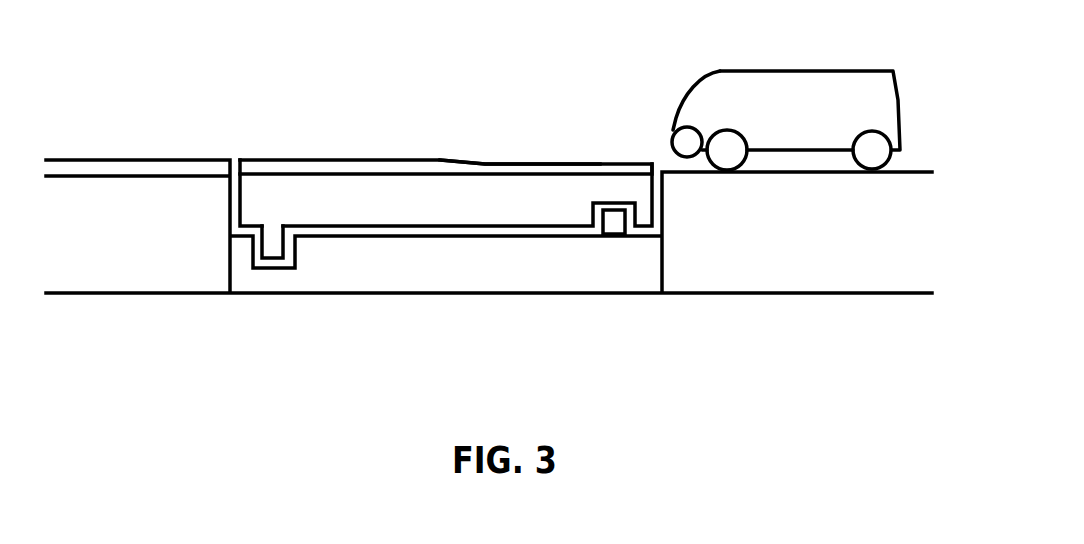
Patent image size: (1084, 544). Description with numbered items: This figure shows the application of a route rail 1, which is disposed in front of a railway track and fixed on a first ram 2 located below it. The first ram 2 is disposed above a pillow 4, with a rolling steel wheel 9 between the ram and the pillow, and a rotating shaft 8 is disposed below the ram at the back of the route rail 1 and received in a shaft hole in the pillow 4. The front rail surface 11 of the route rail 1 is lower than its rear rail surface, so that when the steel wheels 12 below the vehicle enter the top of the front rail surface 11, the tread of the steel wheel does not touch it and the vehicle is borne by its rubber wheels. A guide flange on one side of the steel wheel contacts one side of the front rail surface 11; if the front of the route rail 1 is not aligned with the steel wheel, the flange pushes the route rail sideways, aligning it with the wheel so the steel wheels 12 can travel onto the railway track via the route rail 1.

The route rail 1 is at (307, 166).
The first ram 2 is at (382, 195).
The pillow 4 is at (462, 257).
The rotating shaft 8 is at (275, 240).
The rolling steel wheel 9 is at (612, 220).
The front rail surface 11 is at (530, 163).
The steel wheels 12 is at (673, 122).